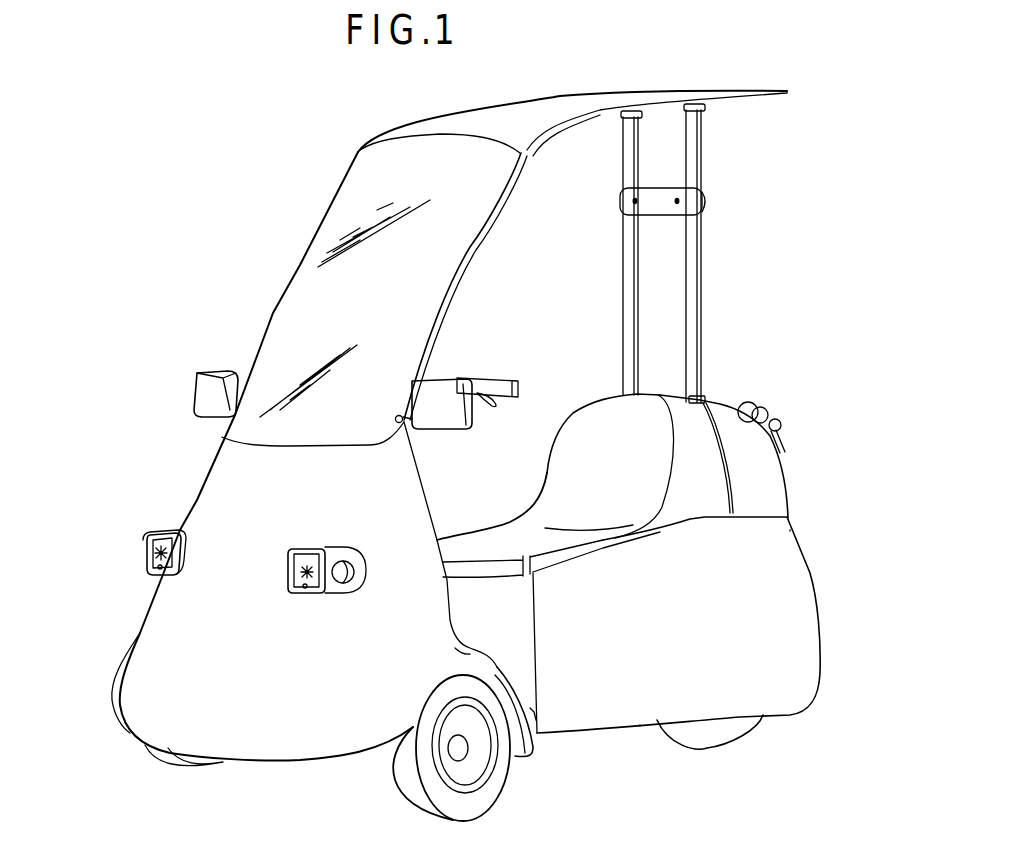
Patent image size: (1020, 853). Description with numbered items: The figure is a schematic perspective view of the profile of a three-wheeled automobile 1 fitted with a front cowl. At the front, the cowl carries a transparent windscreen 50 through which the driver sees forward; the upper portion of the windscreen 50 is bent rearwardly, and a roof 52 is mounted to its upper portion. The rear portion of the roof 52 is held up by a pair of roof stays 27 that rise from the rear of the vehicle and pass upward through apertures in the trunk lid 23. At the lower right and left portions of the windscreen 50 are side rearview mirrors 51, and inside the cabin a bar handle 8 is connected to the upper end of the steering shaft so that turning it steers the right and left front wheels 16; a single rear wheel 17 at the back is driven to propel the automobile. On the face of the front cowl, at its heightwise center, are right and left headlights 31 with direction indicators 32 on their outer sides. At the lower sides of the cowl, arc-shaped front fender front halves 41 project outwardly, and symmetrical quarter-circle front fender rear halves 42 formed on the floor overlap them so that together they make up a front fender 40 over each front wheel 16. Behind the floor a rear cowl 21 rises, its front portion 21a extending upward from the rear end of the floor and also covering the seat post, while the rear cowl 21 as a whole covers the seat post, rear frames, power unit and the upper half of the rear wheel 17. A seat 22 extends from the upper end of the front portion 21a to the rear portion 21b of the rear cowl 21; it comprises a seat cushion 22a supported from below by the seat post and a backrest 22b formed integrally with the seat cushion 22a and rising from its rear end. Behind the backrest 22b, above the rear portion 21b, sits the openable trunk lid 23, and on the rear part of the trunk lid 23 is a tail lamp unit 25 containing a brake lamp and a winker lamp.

The three-wheeled automobile 1 is at (321, 129).
The roof 52 is at (535, 108).
The windscreen 50 is at (337, 227).
The roof stays 27 is at (628, 252).
The side rearview mirrors 51 is at (205, 392).
The bar handle 8 is at (480, 376).
The seat 22 is at (515, 515).
The seat cushion 22a is at (503, 547).
The backrest 22b is at (597, 437).
The trunk lid 23 is at (767, 485).
The tail lamp unit 25 is at (755, 403).
The rear cowl 21 is at (780, 584).
The front portion of the rear cowl 21a is at (633, 668).
The rear portion of the rear cowl 21b is at (797, 623).
The headlights 31 is at (152, 565).
The direction indicators 32 is at (145, 548).
The front fender 40 is at (119, 652).
The front fender front half 41 is at (463, 652).
The front fender rear half 42 is at (537, 713).
The front wheels 16 is at (172, 768).
The rear wheel 17 is at (728, 735).